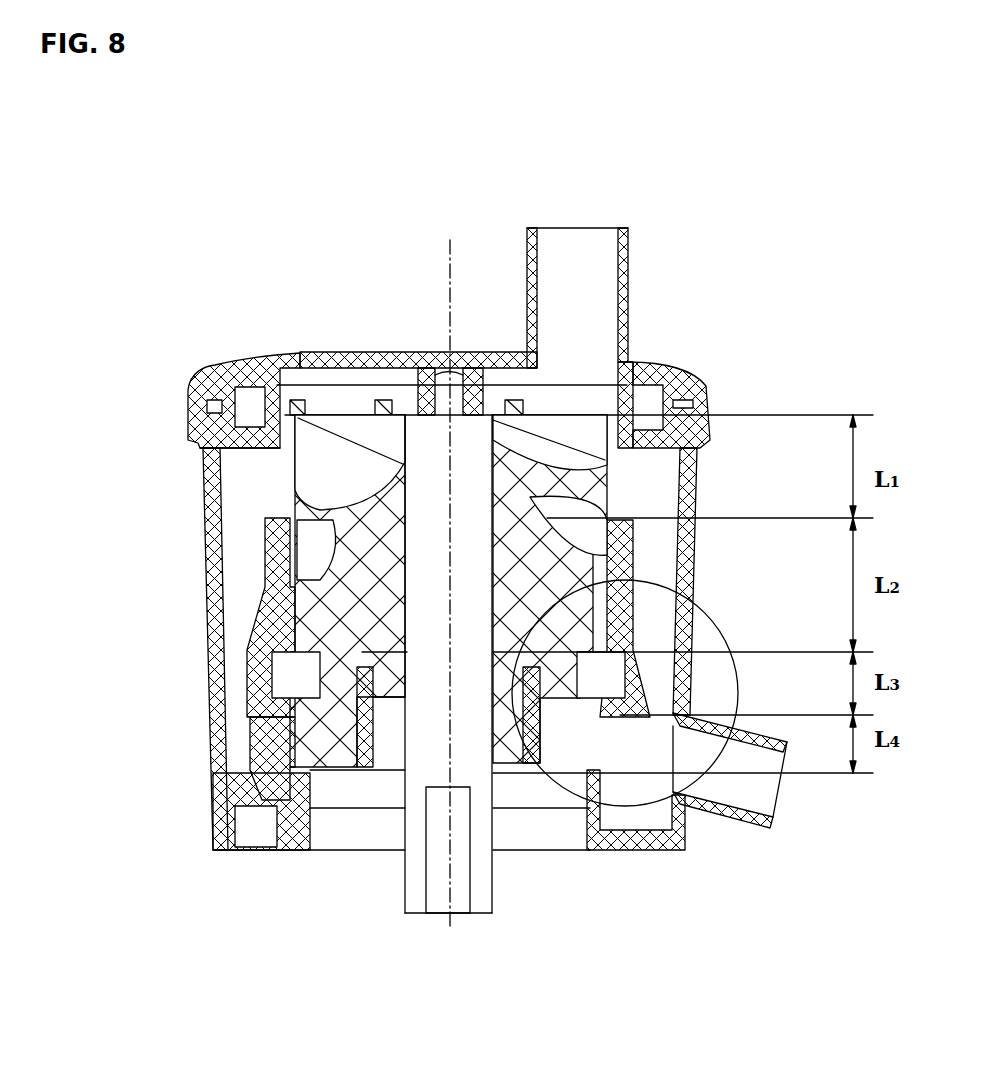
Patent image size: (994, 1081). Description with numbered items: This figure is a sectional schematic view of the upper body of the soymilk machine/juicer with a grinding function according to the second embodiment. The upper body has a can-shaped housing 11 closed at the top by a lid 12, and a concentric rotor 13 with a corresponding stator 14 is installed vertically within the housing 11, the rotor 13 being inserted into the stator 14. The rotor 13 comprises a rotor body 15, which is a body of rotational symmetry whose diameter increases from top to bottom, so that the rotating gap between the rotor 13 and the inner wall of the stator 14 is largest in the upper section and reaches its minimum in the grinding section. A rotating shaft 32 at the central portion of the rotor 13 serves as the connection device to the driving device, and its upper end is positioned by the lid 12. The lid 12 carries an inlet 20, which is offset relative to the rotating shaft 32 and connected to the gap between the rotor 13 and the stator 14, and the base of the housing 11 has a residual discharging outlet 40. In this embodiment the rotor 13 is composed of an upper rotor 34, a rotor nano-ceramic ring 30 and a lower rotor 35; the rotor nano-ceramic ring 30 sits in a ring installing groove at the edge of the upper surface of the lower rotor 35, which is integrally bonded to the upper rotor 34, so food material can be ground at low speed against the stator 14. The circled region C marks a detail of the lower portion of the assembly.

The housing 11 is at (213, 727).
The lid 12 is at (255, 370).
The rotor 13 is at (295, 513).
The stator 14 is at (640, 555).
The rotor body 15 is at (343, 607).
The inlet 20 is at (602, 285).
The rotor nano-ceramic ring 30 is at (300, 655).
The rotating shaft 32 is at (442, 735).
The upper rotor 34 is at (345, 525).
The lower rotor 35 is at (300, 747).
The residual discharging outlet 40 is at (738, 795).
The circle detail C is at (698, 808).